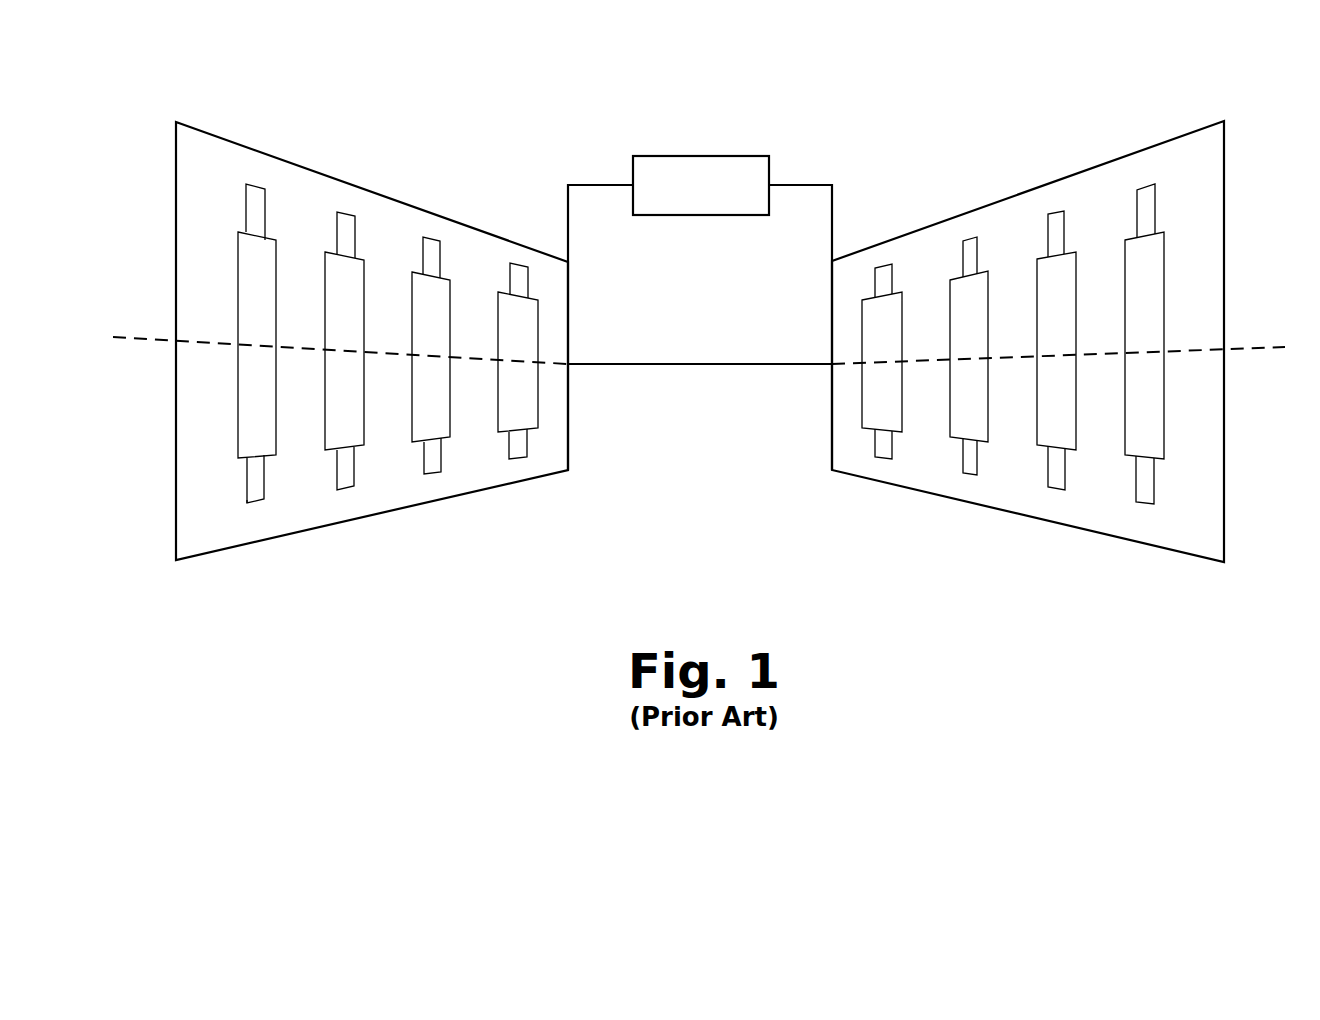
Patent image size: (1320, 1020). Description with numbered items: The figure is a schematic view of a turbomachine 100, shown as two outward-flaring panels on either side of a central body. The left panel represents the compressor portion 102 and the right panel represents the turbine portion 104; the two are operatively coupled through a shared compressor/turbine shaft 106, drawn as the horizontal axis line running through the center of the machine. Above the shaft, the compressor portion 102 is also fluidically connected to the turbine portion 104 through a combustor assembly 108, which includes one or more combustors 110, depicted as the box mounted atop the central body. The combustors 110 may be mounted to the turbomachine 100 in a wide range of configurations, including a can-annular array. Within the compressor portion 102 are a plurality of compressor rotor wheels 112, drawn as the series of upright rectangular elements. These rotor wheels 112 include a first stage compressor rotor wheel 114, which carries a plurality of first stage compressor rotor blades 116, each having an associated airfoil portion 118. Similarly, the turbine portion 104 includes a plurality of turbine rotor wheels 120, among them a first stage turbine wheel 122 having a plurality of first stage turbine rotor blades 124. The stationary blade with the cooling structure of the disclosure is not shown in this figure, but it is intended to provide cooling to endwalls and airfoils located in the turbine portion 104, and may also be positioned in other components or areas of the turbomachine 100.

The turbomachine 100 is at (362, 118).
The compressor portion 102 is at (338, 393).
The turbine portion 104 is at (1128, 553).
The compressor/turbine shaft 106 is at (650, 364).
The combustor assembly 108 is at (630, 142).
The combustor 110 is at (700, 156).
The compressor rotor wheels 112 is at (310, 512).
The first stage compressor rotor wheel 114 is at (245, 435).
The first stage compressor rotor blades 116 is at (243, 503).
The airfoil portion 118 is at (255, 497).
The turbine rotor wheels 120 is at (1165, 488).
The first stage turbine wheel 122 is at (893, 432).
The first stage turbine rotor blades 124 is at (880, 267).